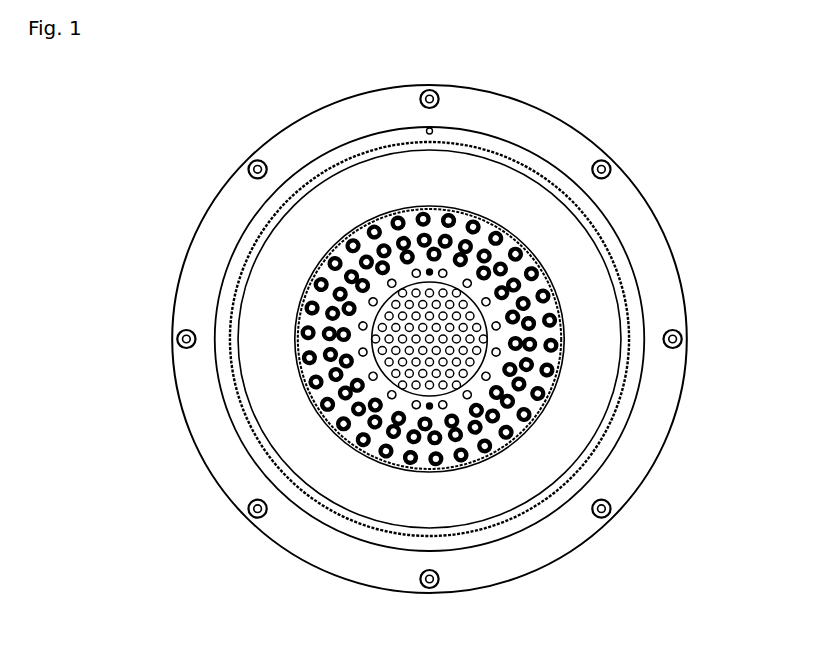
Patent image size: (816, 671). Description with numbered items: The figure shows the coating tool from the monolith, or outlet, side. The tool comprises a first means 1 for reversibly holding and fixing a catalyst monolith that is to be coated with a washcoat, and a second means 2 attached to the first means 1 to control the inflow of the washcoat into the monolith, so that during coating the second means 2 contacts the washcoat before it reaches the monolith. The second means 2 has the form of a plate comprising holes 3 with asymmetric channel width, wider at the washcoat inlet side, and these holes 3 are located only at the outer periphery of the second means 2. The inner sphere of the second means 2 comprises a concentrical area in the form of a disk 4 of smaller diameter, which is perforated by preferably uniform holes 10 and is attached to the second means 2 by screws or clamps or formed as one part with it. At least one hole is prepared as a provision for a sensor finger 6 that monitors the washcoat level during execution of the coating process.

The first means 1 is at (557, 145).
The second means 2 is at (572, 248).
The holes with asymmetric width 3 is at (553, 342).
The concentrical area disk 4 is at (480, 363).
The provision for sensor finger 6 is at (427, 130).
The holes of concentrical area disk 10 is at (372, 343).